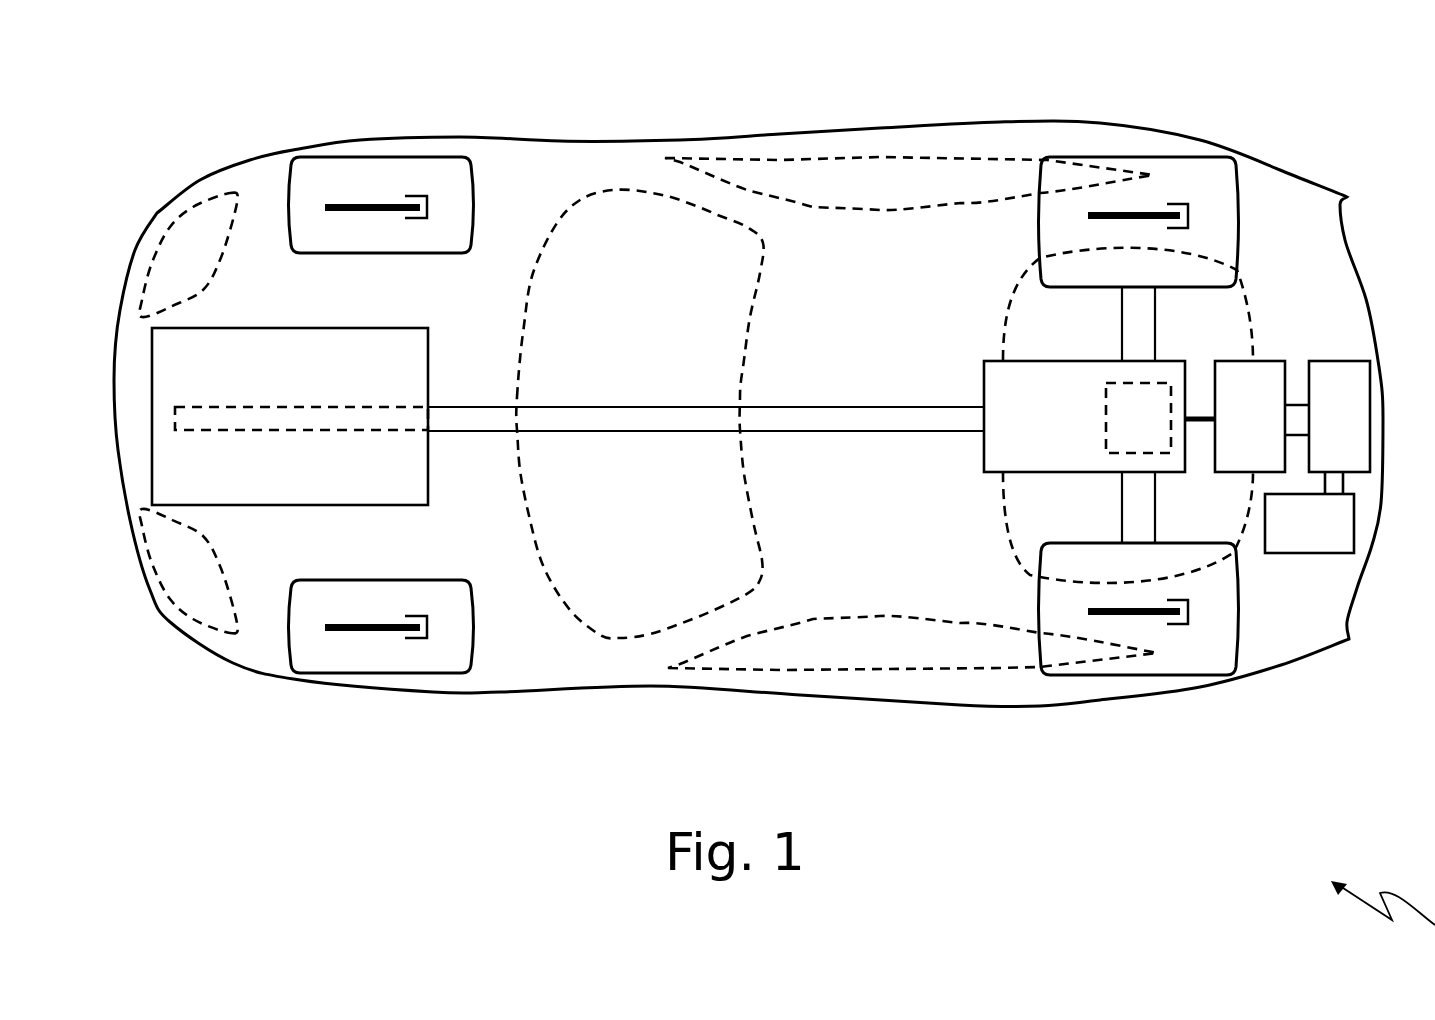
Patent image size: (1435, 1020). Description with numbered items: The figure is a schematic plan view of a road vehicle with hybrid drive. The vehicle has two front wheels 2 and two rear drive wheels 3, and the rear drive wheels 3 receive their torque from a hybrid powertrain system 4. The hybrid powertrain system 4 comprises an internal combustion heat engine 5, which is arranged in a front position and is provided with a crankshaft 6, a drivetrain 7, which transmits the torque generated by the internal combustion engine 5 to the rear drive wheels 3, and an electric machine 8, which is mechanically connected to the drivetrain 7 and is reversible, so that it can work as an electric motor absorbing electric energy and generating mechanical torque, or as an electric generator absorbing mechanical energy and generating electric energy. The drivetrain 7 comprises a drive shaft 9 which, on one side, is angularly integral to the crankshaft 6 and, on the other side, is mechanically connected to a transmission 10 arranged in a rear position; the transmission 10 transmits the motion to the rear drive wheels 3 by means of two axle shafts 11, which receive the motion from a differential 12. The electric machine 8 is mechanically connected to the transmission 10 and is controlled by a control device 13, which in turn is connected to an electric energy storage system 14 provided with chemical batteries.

The front wheels 2 is at (443, 178).
The rear drive wheels 3 is at (1220, 178).
The hybrid powertrain system 4 is at (205, 168).
The internal combustion heat engine 5 is at (160, 358).
The crankshaft 6 is at (277, 413).
The drivetrain 7 is at (780, 118).
The electric machine 8 is at (1247, 416).
The drive shaft 9 is at (800, 422).
The transmission 10 is at (1084, 416).
The axle shafts 11 is at (1135, 315).
The differential 12 is at (1138, 418).
The control device 13 is at (1339, 427).
The electric energy storage system 14 is at (1309, 523).